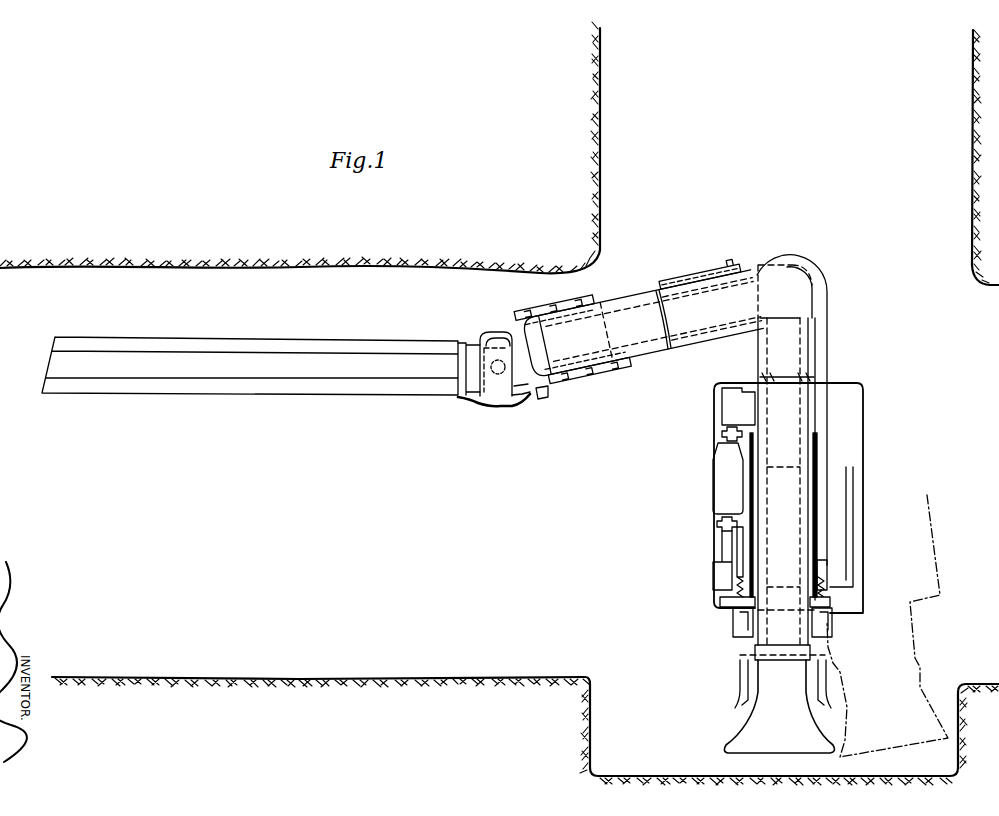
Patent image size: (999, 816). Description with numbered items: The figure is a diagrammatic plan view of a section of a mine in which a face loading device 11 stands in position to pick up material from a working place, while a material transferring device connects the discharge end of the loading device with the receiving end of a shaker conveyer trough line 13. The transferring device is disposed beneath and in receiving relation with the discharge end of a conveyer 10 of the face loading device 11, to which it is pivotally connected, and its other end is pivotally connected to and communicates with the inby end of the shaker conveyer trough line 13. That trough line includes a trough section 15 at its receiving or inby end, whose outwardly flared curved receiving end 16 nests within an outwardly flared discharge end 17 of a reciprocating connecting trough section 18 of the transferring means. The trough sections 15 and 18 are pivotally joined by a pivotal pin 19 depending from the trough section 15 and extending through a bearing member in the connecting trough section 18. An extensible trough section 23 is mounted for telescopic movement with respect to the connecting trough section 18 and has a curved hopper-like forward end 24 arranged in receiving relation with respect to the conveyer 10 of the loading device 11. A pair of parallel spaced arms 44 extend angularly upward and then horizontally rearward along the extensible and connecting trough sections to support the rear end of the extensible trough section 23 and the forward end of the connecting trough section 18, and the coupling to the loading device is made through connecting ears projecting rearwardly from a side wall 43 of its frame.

The conveyer 10 is at (810, 365).
The face loading device 11 is at (858, 450).
The shaker conveyer trough line 13 is at (378, 397).
The trough section 15 is at (462, 401).
The receiving end 16 is at (492, 408).
The discharge end 17 is at (526, 408).
The connecting trough section 18 is at (542, 399).
The pivotal pin 19 is at (490, 361).
The extensible trough section 23 is at (714, 283).
The hopper-like forward end 24 is at (789, 260).
The side wall 43 is at (847, 384).
The parallel spaced arms 44 is at (695, 306).